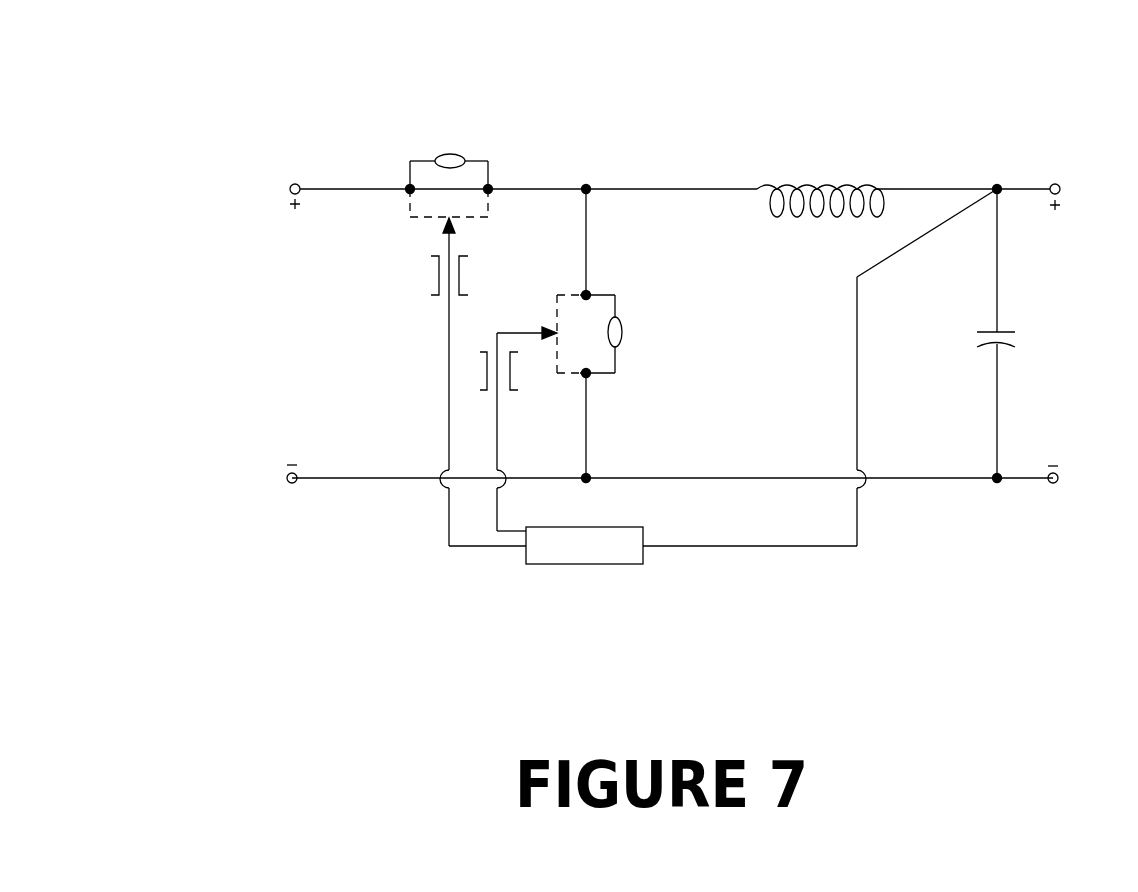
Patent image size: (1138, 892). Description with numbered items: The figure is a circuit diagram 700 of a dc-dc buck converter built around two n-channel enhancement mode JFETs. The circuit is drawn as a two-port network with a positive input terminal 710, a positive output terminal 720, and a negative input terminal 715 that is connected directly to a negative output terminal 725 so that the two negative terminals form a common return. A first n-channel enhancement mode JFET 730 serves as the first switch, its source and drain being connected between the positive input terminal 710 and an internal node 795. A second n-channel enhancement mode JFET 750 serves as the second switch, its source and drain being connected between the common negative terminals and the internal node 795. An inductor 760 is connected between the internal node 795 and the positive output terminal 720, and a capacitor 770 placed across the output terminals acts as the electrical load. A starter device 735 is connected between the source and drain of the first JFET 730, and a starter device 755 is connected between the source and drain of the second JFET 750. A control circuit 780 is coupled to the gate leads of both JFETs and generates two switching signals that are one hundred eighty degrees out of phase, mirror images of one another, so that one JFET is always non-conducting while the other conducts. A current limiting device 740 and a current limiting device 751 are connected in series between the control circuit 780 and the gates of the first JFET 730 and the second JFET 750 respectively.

The circuit diagram 700 is at (195, 76).
The positive input terminal 710 is at (292, 183).
The negative input terminal 715 is at (291, 484).
The positive output terminal 720 is at (1058, 185).
The negative output terminal 725 is at (1056, 486).
The n-channel enhancement mode JFET 730 is at (454, 183).
The starter device 735 is at (461, 156).
The current limiting device 740 is at (431, 295).
The n-channel enhancement mode JFET 750 is at (610, 363).
The current limiting device 751 is at (480, 350).
The starter device 755 is at (622, 341).
The inductor 760 is at (787, 176).
The capacitor 770 is at (1020, 338).
The control circuit 780 is at (622, 565).
The internal node 795 is at (590, 185).